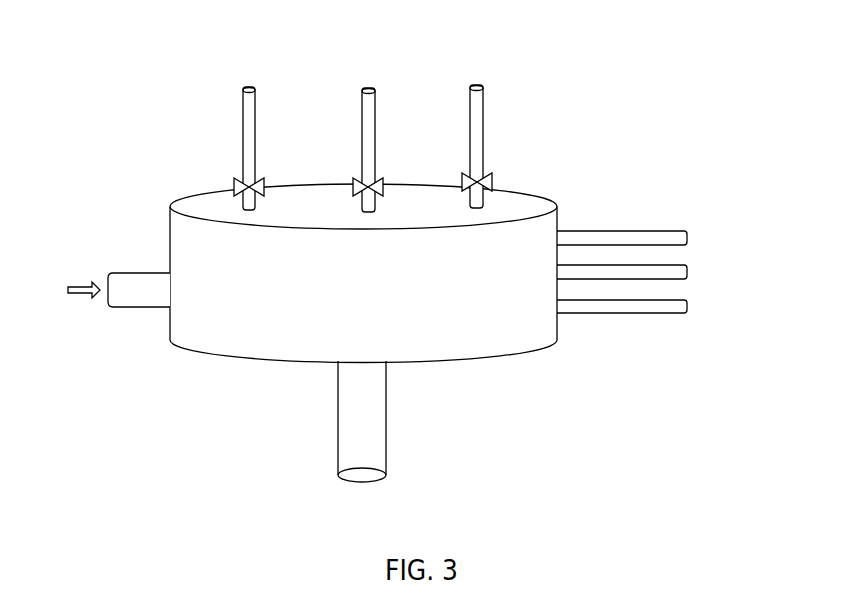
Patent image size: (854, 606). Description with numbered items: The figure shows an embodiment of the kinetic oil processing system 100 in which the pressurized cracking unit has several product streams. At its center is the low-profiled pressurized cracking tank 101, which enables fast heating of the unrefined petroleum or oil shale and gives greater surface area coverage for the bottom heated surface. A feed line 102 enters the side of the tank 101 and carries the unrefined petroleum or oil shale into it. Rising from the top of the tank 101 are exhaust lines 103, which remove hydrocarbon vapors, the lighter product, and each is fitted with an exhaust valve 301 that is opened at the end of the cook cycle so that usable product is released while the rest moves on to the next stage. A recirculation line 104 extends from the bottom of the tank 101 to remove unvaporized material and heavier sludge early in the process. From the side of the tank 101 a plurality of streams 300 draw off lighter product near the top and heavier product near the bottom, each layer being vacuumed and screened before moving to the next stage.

The system 100 is at (134, 115).
The pressurized cracking tank 101 is at (363, 273).
The feed line 102 is at (133, 286).
The exhaust lines 103 is at (480, 98).
The recirculation line 104 is at (352, 407).
The streams 300 is at (687, 232).
The exhaust valves 301 is at (489, 173).